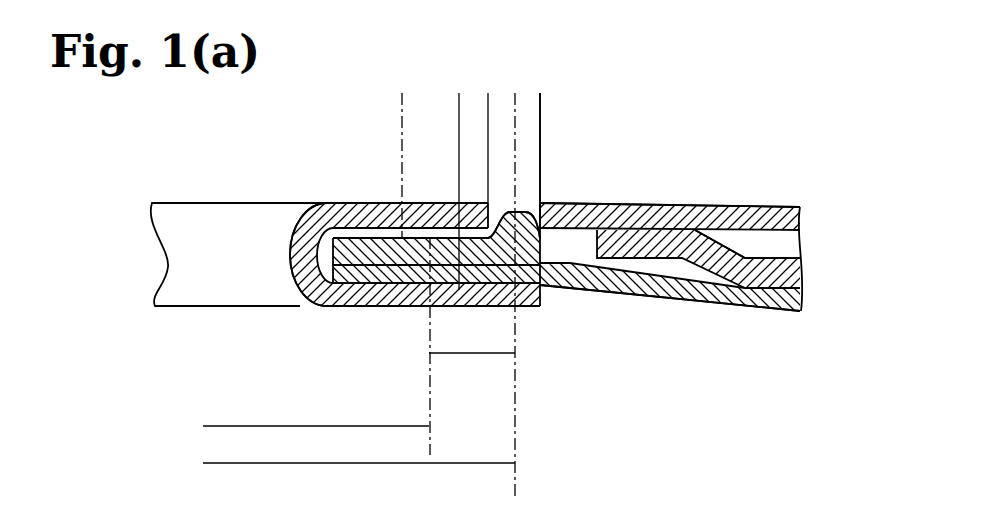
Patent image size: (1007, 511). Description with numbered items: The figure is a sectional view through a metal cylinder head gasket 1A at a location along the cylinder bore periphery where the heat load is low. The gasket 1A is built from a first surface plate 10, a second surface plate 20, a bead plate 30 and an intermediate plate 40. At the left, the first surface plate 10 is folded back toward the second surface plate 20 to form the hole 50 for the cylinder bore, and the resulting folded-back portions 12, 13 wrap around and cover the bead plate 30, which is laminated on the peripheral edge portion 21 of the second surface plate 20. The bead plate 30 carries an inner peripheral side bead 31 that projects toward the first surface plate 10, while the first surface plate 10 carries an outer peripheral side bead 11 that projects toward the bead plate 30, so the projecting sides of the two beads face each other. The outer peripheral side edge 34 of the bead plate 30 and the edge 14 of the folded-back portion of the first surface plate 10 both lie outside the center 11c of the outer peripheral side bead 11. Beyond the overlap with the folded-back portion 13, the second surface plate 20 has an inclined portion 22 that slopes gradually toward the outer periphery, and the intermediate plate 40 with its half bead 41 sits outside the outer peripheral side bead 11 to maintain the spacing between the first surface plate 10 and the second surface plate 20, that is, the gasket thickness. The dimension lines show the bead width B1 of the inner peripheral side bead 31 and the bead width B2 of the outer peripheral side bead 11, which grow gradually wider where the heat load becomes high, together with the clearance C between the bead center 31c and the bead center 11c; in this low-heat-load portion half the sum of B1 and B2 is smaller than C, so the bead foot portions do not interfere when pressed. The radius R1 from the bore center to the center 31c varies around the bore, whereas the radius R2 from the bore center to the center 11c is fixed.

The cylinder head gasket 1A is at (707, 131).
The first surface plate 10 is at (717, 208).
The outer peripheral side bead 11 is at (535, 209).
The center of the outer peripheral side bead 11c is at (514, 152).
The folded-back portion 12 is at (298, 307).
The folded-back portion 13 is at (396, 312).
The edge of the folded-back portion 14 is at (543, 294).
The second surface plate 20 is at (723, 300).
The peripheral edge portion 21 is at (528, 306).
The inclined portion 22 is at (667, 293).
The bead plate 30 is at (327, 232).
The inner peripheral side bead 31 is at (405, 231).
The center of the inner peripheral side bead 31c is at (426, 332).
The outer peripheral side edge 34 is at (568, 267).
The intermediate plate 40 is at (787, 272).
The half bead 41 is at (735, 243).
The hole for a cylinder bore 50 is at (233, 276).
The bead width of the inner peripheral side bead B1 is at (459, 124).
The bead width of the outer peripheral side bead B2 is at (540, 124).
The clearance C is at (472, 366).
The distance between the center of the inner peripheral side bead and the center of R1 is at (316, 416).
The distance between the center of the outer peripheral side bead and the center of R2 is at (359, 478).